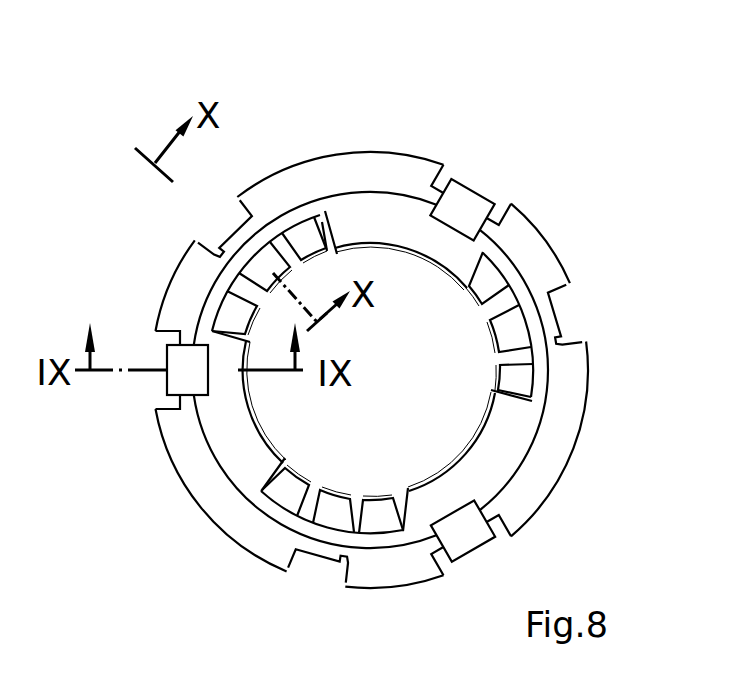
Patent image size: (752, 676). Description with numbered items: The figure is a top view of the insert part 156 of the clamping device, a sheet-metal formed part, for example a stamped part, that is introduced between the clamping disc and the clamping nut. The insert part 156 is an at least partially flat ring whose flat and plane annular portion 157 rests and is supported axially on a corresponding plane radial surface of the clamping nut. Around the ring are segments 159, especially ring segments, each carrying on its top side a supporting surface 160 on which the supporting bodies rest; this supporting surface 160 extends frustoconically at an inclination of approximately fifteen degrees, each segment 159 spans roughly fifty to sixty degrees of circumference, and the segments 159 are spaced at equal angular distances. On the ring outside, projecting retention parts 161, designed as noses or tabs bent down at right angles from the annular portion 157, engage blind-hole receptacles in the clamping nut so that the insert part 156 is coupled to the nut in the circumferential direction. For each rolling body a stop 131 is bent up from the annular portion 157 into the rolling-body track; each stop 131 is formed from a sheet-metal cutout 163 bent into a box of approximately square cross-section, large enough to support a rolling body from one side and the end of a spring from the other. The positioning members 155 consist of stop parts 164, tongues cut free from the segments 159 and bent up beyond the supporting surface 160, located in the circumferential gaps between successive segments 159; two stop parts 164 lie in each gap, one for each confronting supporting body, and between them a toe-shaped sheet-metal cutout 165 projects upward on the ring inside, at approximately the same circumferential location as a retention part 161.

The stop 131 is at (467, 212).
The positioning member 155 is at (331, 206).
The insert part 156 is at (580, 480).
The flat plane annular portion 157 is at (571, 392).
The segment 159 is at (423, 238).
The supporting surface 160 is at (368, 243).
The retention part 161 is at (561, 311).
The sheet-metal cutout 163 is at (461, 181).
The stop part 164 is at (307, 253).
The toe-shaped sheet-metal cutout 165 is at (329, 514).